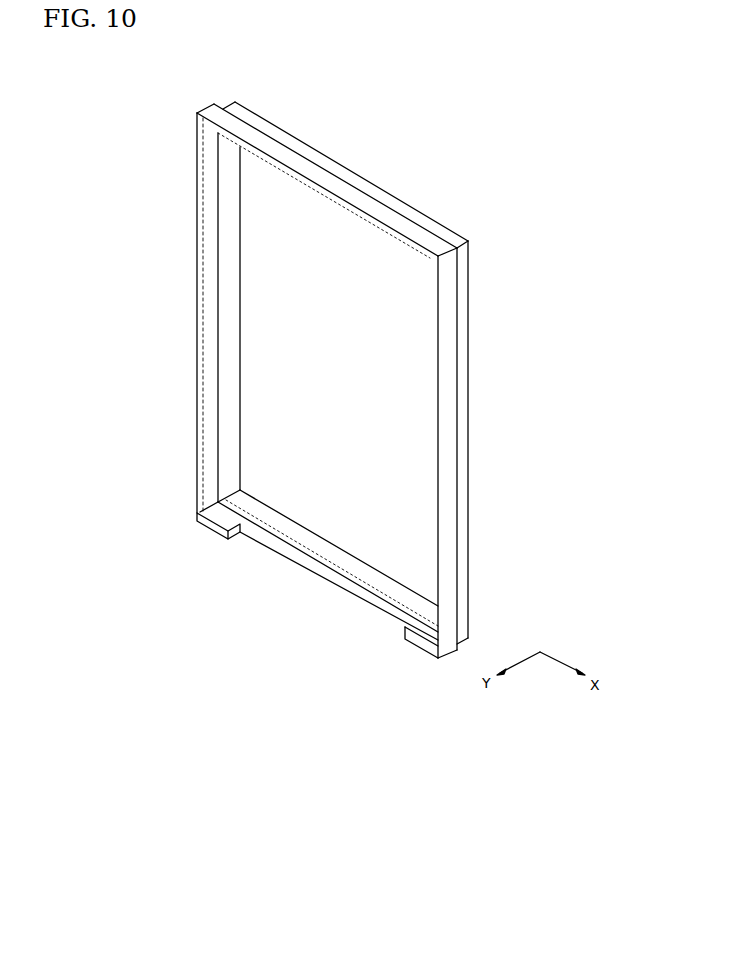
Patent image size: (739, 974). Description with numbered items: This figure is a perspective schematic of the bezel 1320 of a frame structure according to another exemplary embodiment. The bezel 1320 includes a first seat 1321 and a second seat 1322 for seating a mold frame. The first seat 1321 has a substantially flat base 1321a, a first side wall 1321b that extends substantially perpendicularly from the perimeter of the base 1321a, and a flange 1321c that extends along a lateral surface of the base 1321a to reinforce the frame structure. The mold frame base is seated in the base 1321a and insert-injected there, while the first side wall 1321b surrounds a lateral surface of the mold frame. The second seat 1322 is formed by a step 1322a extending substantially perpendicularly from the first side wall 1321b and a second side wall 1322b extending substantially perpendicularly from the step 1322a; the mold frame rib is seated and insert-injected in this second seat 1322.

The bezel 1320 is at (553, 186).
The first seat 1321 is at (104, 320).
The base 1321a is at (243, 362).
The first side wall 1321b is at (227, 317).
The flange 1321c is at (313, 562).
The second seat 1322 is at (104, 177).
The step 1322a is at (218, 257).
The second side wall 1322b is at (197, 190).